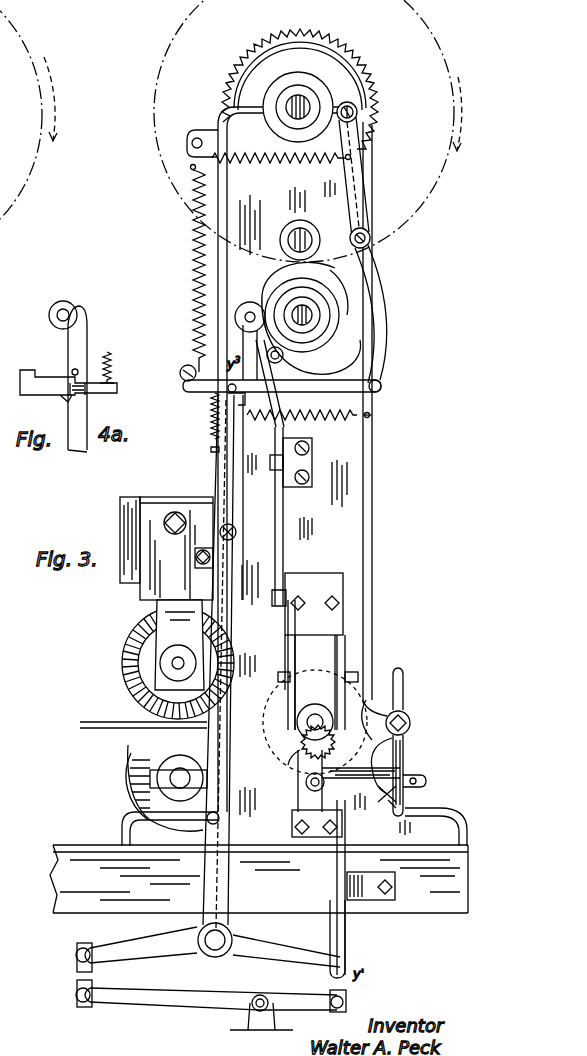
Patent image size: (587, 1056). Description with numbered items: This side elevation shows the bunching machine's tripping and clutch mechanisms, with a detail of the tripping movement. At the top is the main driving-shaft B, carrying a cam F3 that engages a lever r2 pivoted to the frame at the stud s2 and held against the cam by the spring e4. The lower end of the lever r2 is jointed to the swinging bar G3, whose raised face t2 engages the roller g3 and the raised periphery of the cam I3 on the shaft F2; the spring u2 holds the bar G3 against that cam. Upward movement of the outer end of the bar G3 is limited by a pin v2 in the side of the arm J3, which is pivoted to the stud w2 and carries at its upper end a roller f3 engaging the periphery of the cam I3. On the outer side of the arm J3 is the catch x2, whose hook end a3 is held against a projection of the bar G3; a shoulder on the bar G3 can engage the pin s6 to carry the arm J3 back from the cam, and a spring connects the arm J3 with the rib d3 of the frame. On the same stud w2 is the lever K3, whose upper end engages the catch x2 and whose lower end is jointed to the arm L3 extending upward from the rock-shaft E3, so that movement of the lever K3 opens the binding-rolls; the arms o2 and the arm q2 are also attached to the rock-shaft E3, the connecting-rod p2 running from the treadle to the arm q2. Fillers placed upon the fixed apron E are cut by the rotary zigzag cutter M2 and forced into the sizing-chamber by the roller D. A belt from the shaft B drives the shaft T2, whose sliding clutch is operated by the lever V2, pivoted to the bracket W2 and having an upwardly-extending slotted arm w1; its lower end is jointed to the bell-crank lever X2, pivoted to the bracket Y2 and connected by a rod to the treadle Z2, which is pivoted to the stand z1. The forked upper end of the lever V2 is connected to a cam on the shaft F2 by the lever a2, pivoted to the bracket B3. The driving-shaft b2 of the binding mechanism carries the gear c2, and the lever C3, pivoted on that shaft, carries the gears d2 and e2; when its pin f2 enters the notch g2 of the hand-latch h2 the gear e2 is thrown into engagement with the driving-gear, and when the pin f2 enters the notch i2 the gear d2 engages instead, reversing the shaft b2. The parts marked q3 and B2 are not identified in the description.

In FIG. 3, the main driving-shaft B is at (300, 100).
In FIG. 3, the cam F3 is at (333, 112).
In FIG. 3, the spring e4 is at (281, 168).
In FIG. 3, the lever r2 is at (356, 184).
In FIG. 3, the spring u2 is at (196, 273).
In FIG. 4a, the spring u2 is at (116, 367).
In FIG. 3, the stud s2 is at (367, 235).
In FIG. 3, the cam I3 is at (330, 275).
In FIG. 3, the shaft F2 is at (300, 312).
In FIG. 3, the roller g3 is at (327, 300).
In FIG. 3, the raised face t2 is at (302, 318).
In FIG. 3, the roller f3 is at (250, 303).
In FIG. 4a, the roller f3 is at (70, 308).
In FIG. 3, the arm J3 is at (235, 334).
In FIG. 4a, the arm J3 is at (86, 416).
In FIG. 3, the roller q3 is at (284, 350).
In FIG. 3, the catch x2 is at (264, 383).
In FIG. 3, the swinging bar G3 is at (326, 381).
In FIG. 4a, the swinging bar G3 is at (68, 382).
In FIG. 3, the pivot screw B2 is at (185, 384).
In FIG. 3, the treadle Z2 is at (212, 406).
In FIG. 3, the hook end a3 is at (243, 400).
In FIG. 3, the lever C3 is at (323, 594).
In FIG. 3, the rib d3 is at (377, 414).
In FIG. 3, the lever a2 is at (278, 426).
In FIG. 3, the bracket B3 is at (312, 460).
In FIG. 3, the lever K3 is at (226, 492).
In FIG. 3, the pivot-stud w2 is at (237, 533).
In FIG. 3, the rotary zigzag cutter M2 is at (126, 652).
In FIG. 3, the fixed apron E is at (143, 716).
In FIG. 3, the roller D is at (128, 770).
In FIG. 3, the bracket W2 is at (338, 670).
In FIG. 3, the upwardly-extending arm w1 is at (288, 634).
In FIG. 3, the shaft T2 is at (315, 718).
In FIG. 3, the lever V2 is at (283, 702).
In FIG. 3, the gear c2 is at (300, 781).
In FIG. 3, the driving-shaft b2 is at (305, 783).
In FIG. 3, the gear d2 is at (300, 760).
In FIG. 3, the bell-crank lever X2 is at (346, 842).
In FIG. 3, the hand-latch h2 is at (401, 756).
In FIG. 3, the notch g2 is at (414, 772).
In FIG. 3, the gear e2 is at (371, 747).
In FIG. 3, the notch i2 is at (404, 794).
In FIG. 3, the pin f2 is at (381, 800).
In FIG. 3, the bracket Y2 is at (358, 876).
In FIG. 3, the arm L3 is at (259, 879).
In FIG. 3, the rock-shaft E3 is at (230, 940).
In FIG. 3, the arm q2 is at (130, 949).
In FIG. 3, the arm o2 is at (296, 955).
In FIG. 3, the connecting-rod p2 is at (77, 990).
In FIG. 3, the stand z1 is at (272, 1016).
In FIG. 4a, the pin v2 is at (72, 371).
In FIG. 4a, the pin s6 is at (62, 406).